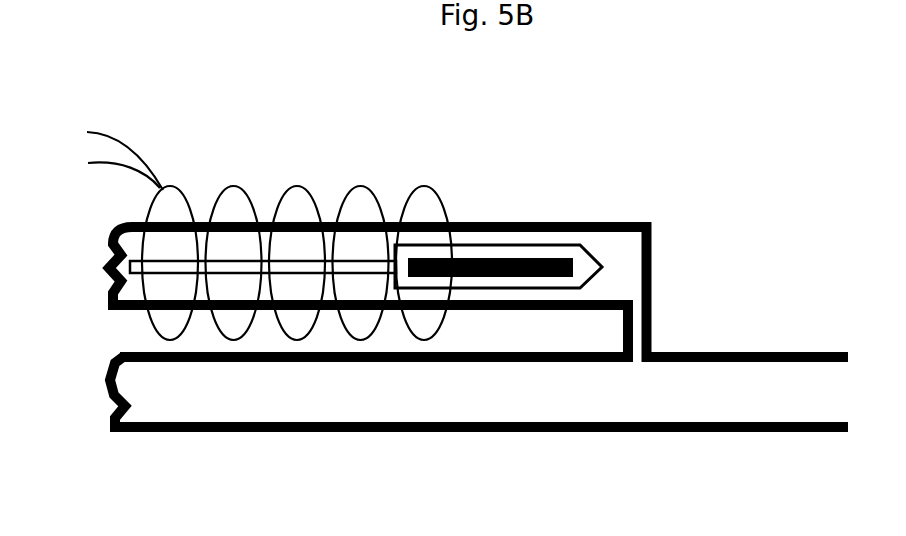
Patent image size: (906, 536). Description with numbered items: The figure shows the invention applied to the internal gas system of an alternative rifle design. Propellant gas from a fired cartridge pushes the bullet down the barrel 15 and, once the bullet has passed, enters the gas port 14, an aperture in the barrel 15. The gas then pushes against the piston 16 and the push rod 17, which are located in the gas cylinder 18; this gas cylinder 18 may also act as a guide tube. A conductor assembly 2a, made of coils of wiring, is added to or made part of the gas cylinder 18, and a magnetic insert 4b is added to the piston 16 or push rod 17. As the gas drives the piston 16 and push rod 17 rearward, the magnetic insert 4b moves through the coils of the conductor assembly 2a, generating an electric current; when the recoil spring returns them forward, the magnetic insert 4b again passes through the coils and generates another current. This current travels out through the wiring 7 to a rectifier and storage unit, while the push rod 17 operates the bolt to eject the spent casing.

The wiring 7 is at (128, 127).
The conductor assembly 2a is at (298, 176).
The piston 16 is at (493, 243).
The magnetic insert 4b is at (544, 255).
The push rod 17 is at (127, 258).
The gas cylinder 18 is at (658, 252).
The barrel 15 is at (479, 392).
The gas port 14 is at (637, 368).